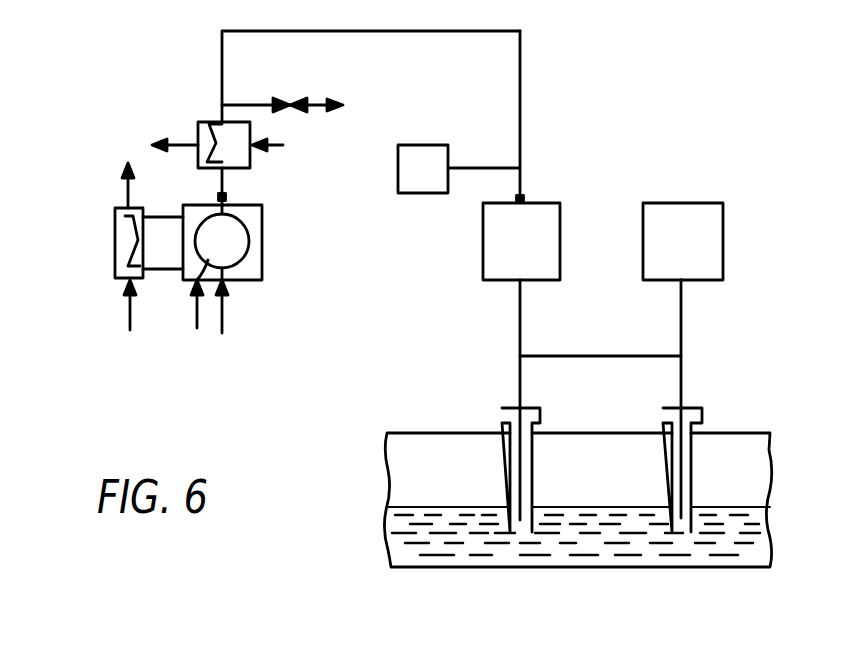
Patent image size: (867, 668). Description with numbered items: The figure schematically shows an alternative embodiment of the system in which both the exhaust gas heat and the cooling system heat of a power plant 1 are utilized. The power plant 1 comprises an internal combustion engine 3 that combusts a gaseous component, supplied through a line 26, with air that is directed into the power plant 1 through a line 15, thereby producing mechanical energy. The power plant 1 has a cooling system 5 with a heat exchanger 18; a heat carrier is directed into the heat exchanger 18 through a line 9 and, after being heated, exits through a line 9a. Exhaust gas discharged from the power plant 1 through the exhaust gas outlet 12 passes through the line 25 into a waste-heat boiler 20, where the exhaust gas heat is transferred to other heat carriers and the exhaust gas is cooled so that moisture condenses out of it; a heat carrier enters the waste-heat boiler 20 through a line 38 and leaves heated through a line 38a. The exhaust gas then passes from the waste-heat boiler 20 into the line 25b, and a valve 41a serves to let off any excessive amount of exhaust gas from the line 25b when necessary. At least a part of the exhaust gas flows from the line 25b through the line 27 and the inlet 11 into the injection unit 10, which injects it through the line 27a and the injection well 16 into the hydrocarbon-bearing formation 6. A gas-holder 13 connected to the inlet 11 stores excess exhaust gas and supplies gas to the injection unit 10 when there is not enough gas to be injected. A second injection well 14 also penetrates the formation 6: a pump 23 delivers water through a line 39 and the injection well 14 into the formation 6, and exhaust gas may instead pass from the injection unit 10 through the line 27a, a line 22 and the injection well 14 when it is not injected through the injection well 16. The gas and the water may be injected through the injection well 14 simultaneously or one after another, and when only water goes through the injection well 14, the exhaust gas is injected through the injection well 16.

The power plant 1 is at (262, 276).
The internal combustion engine 3 is at (237, 250).
The cooling system 5 is at (167, 256).
The hydrocarbon-bearing formation 6 is at (424, 520).
The line 9 is at (125, 305).
The line 9a is at (126, 186).
The injection unit 10 is at (496, 253).
The inlet 11 is at (523, 195).
The exhaust gas outlet 12 is at (218, 195).
The gas-holder 13 is at (423, 183).
The injection well 14 is at (672, 458).
The line 15 is at (196, 312).
The injection well 16 is at (510, 458).
The heat exchanger 18 is at (118, 249).
The waste-heat boiler 20 is at (243, 149).
The line 22 is at (593, 354).
The pump 23 is at (649, 220).
The line 25 is at (226, 186).
The line 25b is at (221, 84).
The line 26 is at (224, 318).
The line 27 is at (519, 117).
The line 27a is at (519, 308).
The line 38 is at (272, 144).
The line 38a is at (190, 141).
The line 39 is at (680, 298).
The valve 41a is at (290, 101).